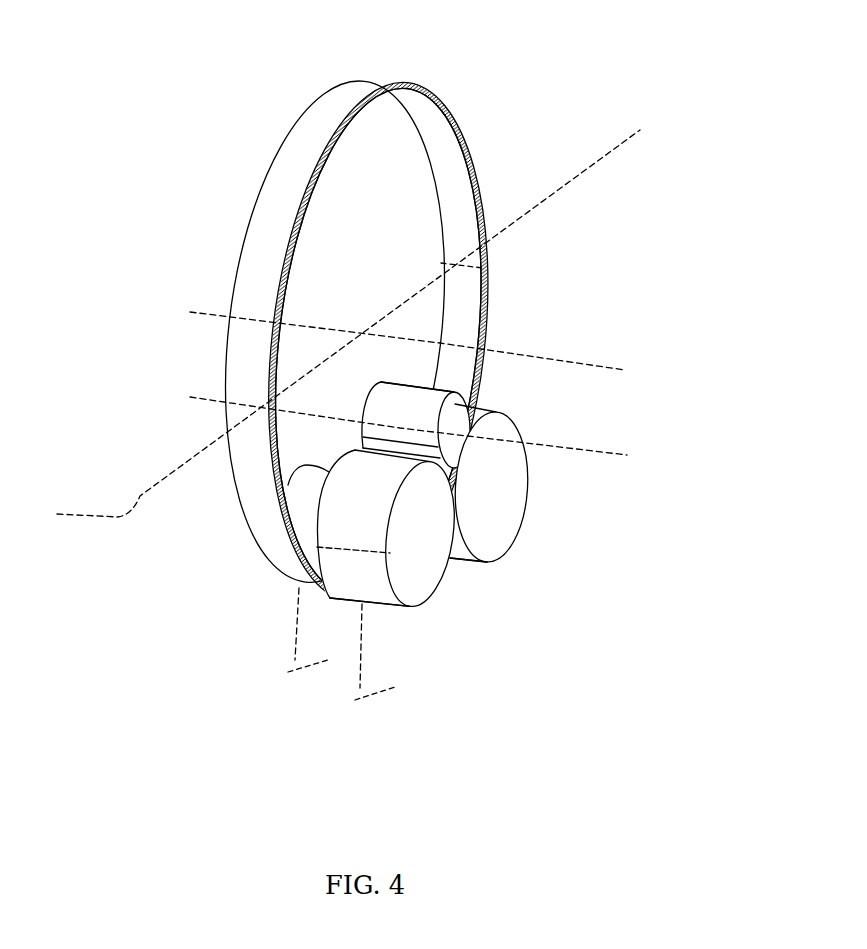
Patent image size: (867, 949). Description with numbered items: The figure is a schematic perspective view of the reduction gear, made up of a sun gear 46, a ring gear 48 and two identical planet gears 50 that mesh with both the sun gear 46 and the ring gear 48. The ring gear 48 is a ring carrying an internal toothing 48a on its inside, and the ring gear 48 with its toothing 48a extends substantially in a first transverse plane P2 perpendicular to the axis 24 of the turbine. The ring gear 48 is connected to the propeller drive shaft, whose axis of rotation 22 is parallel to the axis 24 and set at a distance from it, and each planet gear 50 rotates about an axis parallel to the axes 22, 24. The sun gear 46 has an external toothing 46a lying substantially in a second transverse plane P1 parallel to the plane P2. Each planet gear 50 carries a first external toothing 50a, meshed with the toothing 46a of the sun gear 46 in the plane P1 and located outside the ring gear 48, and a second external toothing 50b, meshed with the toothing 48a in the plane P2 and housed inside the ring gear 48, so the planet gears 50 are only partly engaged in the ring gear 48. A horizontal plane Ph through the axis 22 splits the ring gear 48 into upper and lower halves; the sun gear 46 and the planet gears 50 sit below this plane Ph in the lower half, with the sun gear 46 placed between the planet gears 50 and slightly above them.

The axis of rotation of the propeller 22 is at (192, 312).
The axis of the turbine 24 is at (555, 446).
The sun gear 46 is at (448, 378).
The external toothing of the sun gear 46a is at (400, 403).
The ring gear 48 is at (391, 70).
The internal toothing of the ring gear 48a is at (438, 142).
The planet gears 50 is at (539, 428).
The first external toothing of the planet gear 50a is at (460, 560).
The second external toothing of the planet gear 50b is at (300, 485).
The horizontal plane Ph is at (139, 467).
The second transverse plane P1 is at (368, 690).
The first transverse plane P2 is at (295, 660).